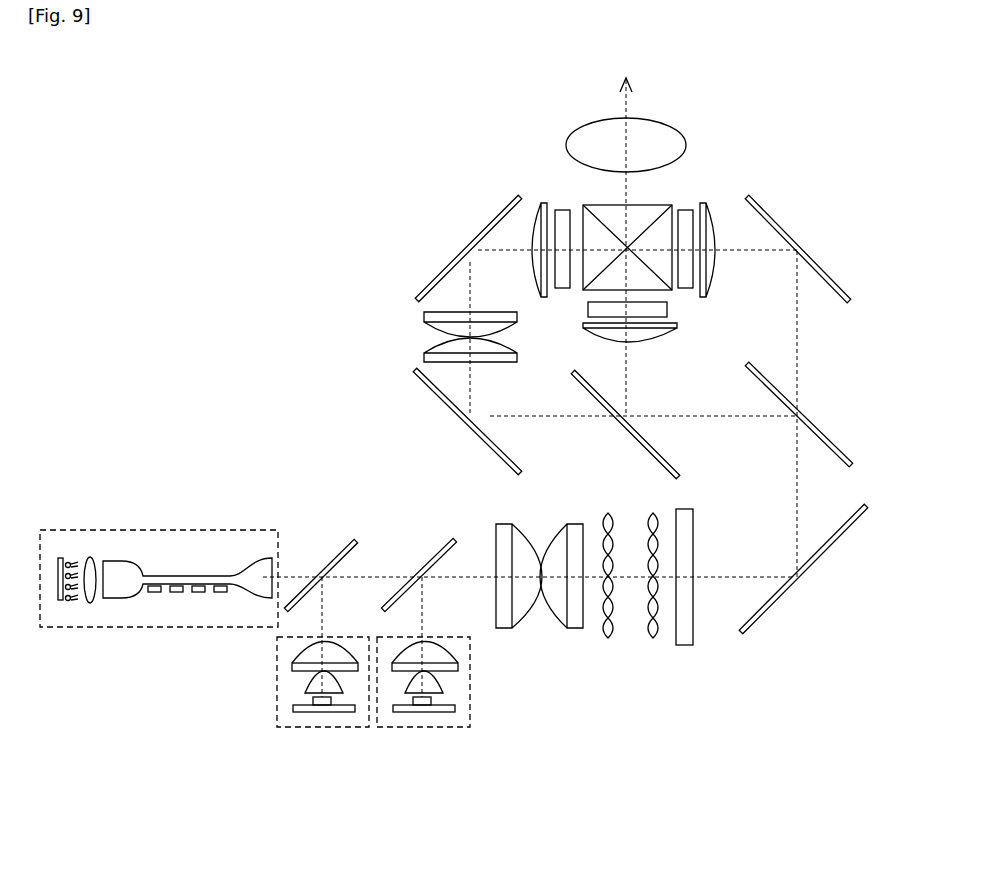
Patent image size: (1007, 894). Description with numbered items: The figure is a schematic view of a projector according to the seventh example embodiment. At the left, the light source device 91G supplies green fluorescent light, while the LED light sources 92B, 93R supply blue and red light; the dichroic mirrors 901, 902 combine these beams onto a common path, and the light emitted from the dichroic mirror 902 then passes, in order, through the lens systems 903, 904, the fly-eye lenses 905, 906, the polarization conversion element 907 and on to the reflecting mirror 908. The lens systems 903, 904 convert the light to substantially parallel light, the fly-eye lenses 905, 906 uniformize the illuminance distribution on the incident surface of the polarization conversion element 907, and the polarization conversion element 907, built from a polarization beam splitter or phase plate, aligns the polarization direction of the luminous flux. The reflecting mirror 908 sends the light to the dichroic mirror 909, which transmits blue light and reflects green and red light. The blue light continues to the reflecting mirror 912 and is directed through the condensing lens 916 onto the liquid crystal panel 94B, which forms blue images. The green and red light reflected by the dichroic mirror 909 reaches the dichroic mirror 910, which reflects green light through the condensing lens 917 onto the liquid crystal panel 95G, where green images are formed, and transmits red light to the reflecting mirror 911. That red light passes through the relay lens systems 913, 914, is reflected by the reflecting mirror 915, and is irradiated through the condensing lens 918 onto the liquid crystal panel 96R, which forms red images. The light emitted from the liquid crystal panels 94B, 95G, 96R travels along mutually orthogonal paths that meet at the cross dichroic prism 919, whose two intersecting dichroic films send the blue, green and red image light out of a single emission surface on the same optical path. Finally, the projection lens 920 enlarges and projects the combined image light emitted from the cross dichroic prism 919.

The light source device 91G is at (163, 530).
The LED light source 92B is at (313, 728).
The LED light source 93R is at (430, 728).
The dichroic mirror 901 is at (349, 541).
The dichroic mirror 902 is at (452, 542).
The lens system 903 is at (510, 524).
The lens system 904 is at (578, 524).
The fly-eye lens 905 is at (608, 640).
The fly-eye lens 906 is at (650, 640).
The polarization conversion element 907 is at (688, 646).
The reflecting mirror 908 is at (757, 620).
The dichroic mirror 909 is at (830, 443).
The dichroic mirror 910 is at (634, 437).
The reflecting mirror 911 is at (482, 438).
The reflecting mirror 912 is at (768, 216).
The lens system 913 is at (424, 358).
The lens system 914 is at (424, 318).
The reflecting mirror 915 is at (497, 218).
The condensing lens 916 is at (707, 205).
The condensing lens 917 is at (637, 343).
The condensing lens 918 is at (550, 206).
The cross dichroic prism 919 is at (645, 207).
The projection lens 920 is at (648, 120).
The liquid crystal panel 94B is at (686, 292).
The liquid crystal panel 95G is at (662, 311).
The liquid crystal panel 96R is at (563, 290).